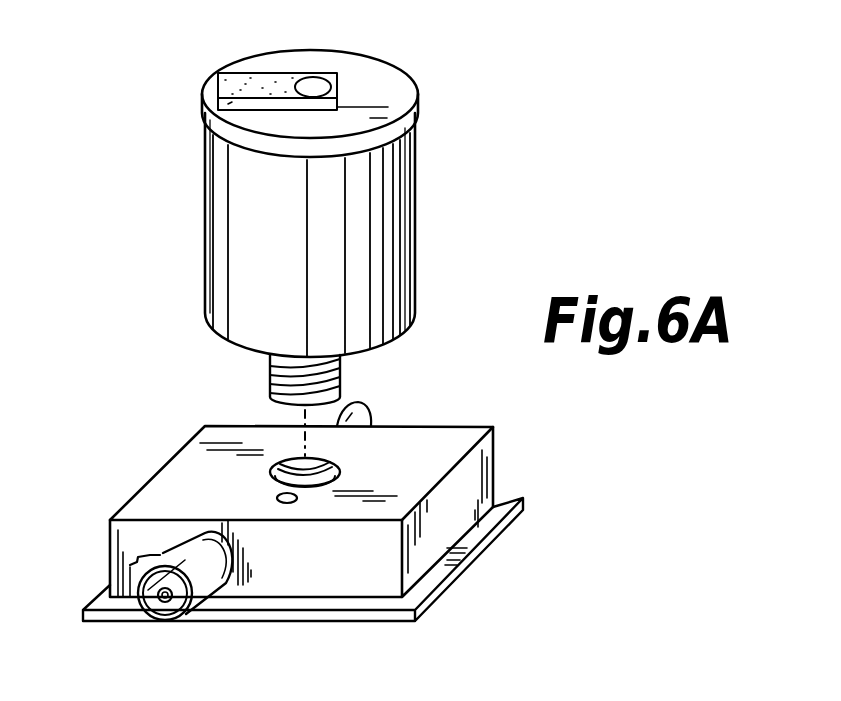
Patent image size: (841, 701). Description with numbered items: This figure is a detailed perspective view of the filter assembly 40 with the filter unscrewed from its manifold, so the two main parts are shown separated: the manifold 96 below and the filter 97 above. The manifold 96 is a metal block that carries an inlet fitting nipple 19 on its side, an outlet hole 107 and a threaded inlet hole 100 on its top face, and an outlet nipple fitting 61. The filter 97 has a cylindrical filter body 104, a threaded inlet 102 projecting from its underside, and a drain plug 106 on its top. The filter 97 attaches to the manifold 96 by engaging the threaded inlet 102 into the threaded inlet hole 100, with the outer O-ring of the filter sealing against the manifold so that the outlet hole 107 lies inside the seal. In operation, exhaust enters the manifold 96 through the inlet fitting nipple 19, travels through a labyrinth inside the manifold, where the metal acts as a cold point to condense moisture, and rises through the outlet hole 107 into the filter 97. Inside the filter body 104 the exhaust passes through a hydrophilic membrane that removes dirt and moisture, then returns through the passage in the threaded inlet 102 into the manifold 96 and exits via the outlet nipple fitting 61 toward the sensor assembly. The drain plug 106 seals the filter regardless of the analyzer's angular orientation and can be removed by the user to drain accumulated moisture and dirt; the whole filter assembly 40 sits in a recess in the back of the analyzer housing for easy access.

The filter assembly 40 is at (462, 117).
The filter 97 is at (204, 191).
The drain plug 106 is at (332, 73).
The filter body 104 is at (416, 231).
The threaded inlet 102 is at (343, 376).
The manifold 96 is at (495, 464).
The outlet nipple fitting 61 is at (372, 419).
The threaded inlet hole 100 is at (338, 472).
The outlet hole 107 is at (277, 498).
The inlet fitting nipple 19 is at (131, 566).